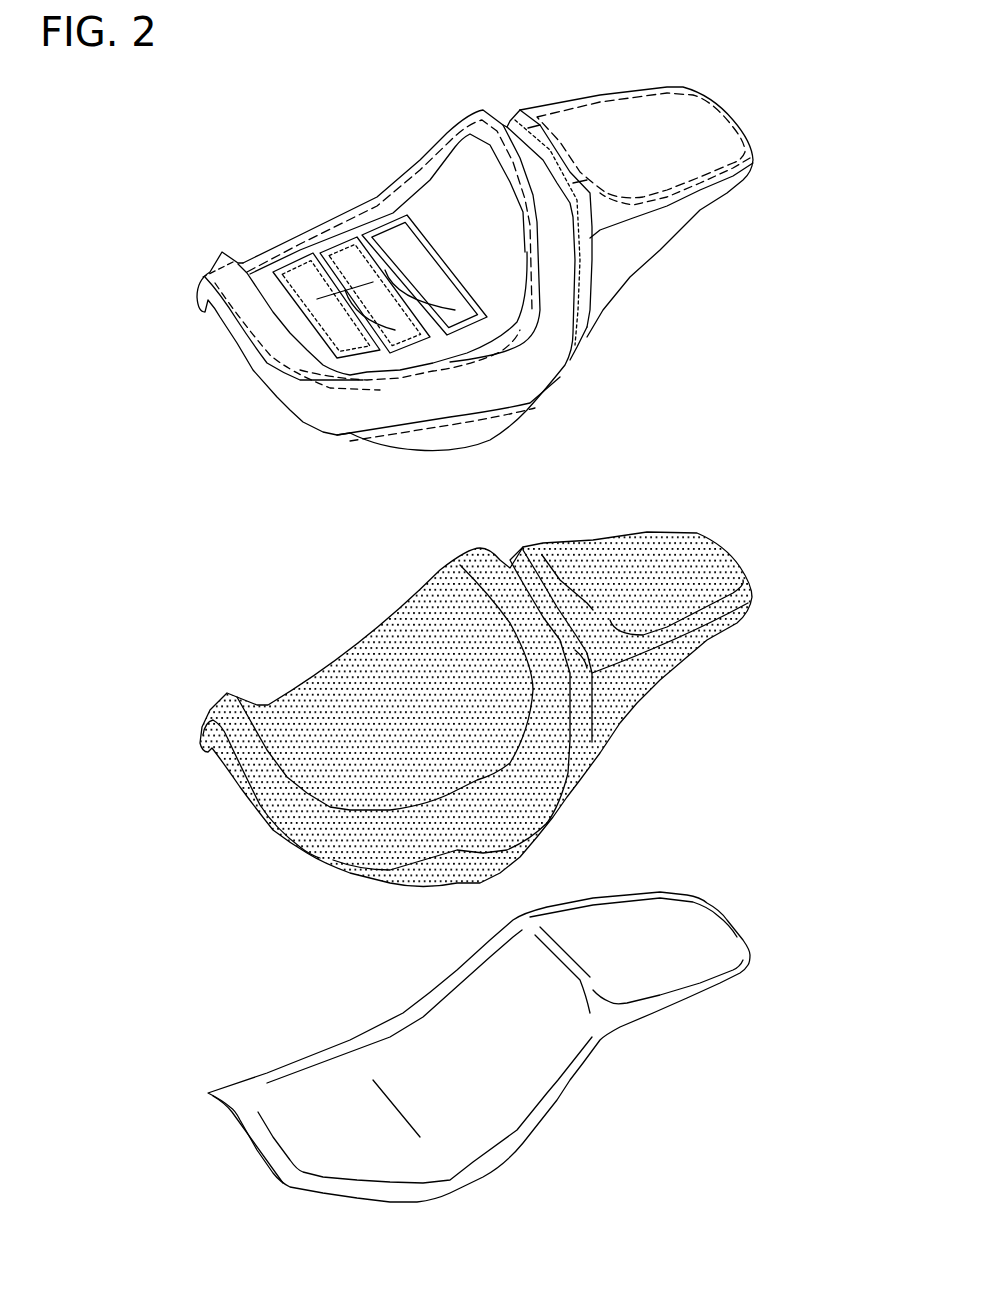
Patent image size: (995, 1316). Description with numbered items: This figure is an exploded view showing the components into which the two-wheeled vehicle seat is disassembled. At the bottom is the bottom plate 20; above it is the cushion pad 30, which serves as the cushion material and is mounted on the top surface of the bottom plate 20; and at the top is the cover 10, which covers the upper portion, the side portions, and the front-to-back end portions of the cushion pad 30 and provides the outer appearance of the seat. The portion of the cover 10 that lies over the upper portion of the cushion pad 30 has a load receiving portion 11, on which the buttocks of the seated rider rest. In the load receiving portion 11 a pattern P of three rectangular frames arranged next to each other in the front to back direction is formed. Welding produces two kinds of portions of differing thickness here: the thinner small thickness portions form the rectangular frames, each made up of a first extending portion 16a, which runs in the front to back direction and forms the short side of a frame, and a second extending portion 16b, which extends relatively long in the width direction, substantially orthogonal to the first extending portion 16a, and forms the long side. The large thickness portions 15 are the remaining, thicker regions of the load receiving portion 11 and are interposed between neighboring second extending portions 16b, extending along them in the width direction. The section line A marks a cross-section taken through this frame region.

The cover 10 is at (483, 100).
The load receiving portion 11 is at (480, 345).
The large thickness portion 15 is at (348, 340).
The first extending portion 16a is at (340, 233).
The second extending portion 16b is at (270, 270).
The bottom plate 20 is at (723, 885).
The cushion pad 30 is at (715, 520).
The pattern P is at (440, 222).
The section line A- A is at (319, 301).